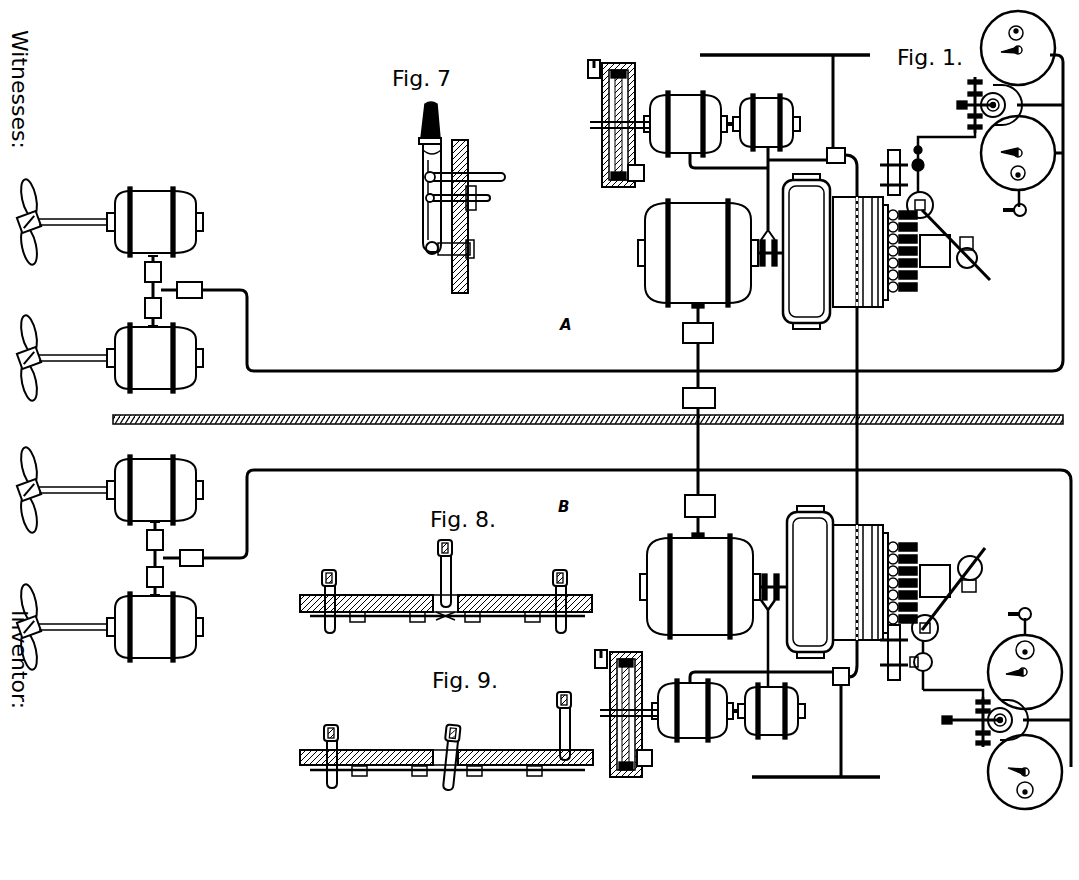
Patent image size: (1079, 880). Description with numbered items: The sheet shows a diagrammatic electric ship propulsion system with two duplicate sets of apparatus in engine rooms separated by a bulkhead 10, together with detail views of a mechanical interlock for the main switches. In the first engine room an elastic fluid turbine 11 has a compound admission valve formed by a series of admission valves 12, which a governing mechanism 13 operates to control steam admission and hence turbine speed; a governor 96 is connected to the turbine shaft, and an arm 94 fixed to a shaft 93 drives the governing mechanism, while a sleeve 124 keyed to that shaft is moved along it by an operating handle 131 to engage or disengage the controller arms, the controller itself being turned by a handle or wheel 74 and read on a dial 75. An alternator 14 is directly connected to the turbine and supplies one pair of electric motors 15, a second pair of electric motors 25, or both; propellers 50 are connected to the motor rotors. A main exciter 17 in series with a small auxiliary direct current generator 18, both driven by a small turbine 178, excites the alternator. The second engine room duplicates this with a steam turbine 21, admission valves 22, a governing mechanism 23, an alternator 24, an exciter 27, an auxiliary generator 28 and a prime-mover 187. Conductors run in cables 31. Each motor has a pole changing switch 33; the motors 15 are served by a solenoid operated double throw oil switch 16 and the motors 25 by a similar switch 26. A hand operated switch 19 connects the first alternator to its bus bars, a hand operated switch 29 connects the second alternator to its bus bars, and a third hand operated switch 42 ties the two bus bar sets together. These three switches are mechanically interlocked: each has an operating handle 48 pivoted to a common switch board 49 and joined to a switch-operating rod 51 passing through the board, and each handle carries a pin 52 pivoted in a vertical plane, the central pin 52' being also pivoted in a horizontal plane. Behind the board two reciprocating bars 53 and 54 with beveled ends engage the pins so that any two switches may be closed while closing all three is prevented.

In FIG. 1, the bulkhead 10 is at (500, 415).
In FIG. 1, the elastic fluid turbine 11 is at (835, 251).
In FIG. 1, the admission valves 12 is at (915, 270).
In FIG. 1, the governing mechanism 13 is at (932, 205).
In FIG. 1, the alternator 14 is at (710, 261).
In FIG. 1, the electric motors 15 is at (155, 290).
In FIG. 1, the double throw oil switch 16 is at (196, 282).
In FIG. 1, the main exciter 17 is at (706, 129).
In FIG. 1, the auxiliary direct current generator 18 is at (777, 162).
In FIG. 1, the hand operated switch 19 is at (683, 335).
In FIG. 1, the steam turbine 21 is at (837, 582).
In FIG. 1, the admission valves 22 is at (915, 555).
In FIG. 1, the governing mechanism 23 is at (938, 632).
In FIG. 1, the alternator 24 is at (713, 602).
In FIG. 1, the electric motors 25 is at (155, 558).
In FIG. 1, the switch 26 is at (200, 552).
In FIG. 1, the exciter 27 is at (742, 707).
In FIG. 1, the auxiliary generator 28 is at (769, 711).
In FIG. 1, the hand operated switch 29 is at (685, 503).
In FIG. 1, the cables 31 is at (349, 371).
In FIG. 1, the pole changing switch 33 is at (145, 306).
In FIG. 1, the hand operated switch 42 is at (683, 398).
In FIG. 7, the operating handle 48 is at (425, 124).
In FIG. 7, the switch board 49 is at (468, 233).
In FIG. 8, the switch board 49 is at (495, 595).
In FIG. 9, the switch board 49 is at (387, 750).
In FIG. 1, the propellers 50 is at (38, 330).
In FIG. 7, the switch-operating rod 51 is at (495, 171).
In FIG. 7, the pin 52 is at (475, 199).
In FIG. 8, the pin 52 is at (446, 610).
In FIG. 9, the pin 52 is at (429, 746).
In FIG. 8, the pin 52' is at (427, 573).
In FIG. 9, the pin 52' is at (437, 765).
In FIG. 8, the bar 53 is at (505, 620).
In FIG. 9, the bar 53 is at (510, 774).
In FIG. 8, the bar 54 is at (392, 620).
In FIG. 9, the bar 54 is at (390, 774).
In FIG. 1, the handle or wheel 74 is at (1031, 645).
In FIG. 1, the dial 75 is at (1010, 672).
In FIG. 1, the shaft 93 is at (982, 742).
In FIG. 1, the arm 94 is at (955, 690).
In FIG. 1, the governor 96 is at (983, 570).
In FIG. 1, the sleeve 124 is at (978, 708).
In FIG. 1, the operating handle 131 is at (956, 104).
In FIG. 1, the small turbine 178 is at (644, 180).
In FIG. 1, the prime-mover 187 is at (644, 672).